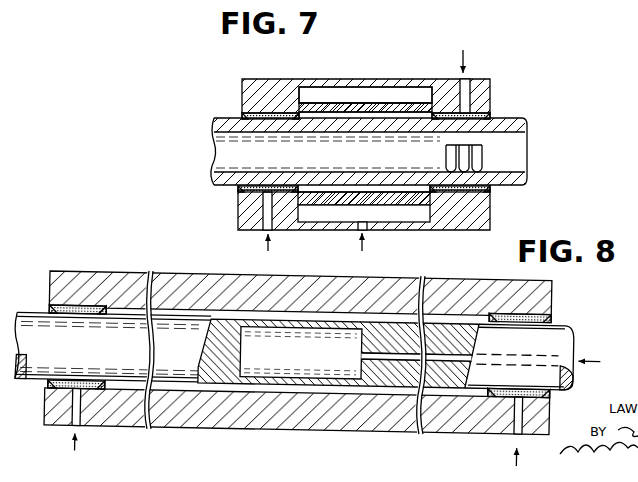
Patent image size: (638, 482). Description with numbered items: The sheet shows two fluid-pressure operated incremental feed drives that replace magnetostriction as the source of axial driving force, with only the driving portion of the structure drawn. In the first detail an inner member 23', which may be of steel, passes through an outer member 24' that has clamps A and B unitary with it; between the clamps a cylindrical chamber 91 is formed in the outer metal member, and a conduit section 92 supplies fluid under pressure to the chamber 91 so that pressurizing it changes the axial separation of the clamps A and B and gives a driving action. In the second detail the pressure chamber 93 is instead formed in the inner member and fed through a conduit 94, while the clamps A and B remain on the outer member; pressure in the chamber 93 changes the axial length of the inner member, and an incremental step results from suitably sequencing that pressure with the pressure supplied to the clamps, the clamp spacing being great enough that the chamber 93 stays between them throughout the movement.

In FIG. 7, the outer member 24' is at (345, 96).
In FIG. 7, the inner member 23' is at (375, 139).
In FIG. 7, the cylindrical chamber 91 is at (361, 90).
In FIG. 7, the conduit section 92 is at (361, 223).
In FIG. 7, the clamp A is at (468, 112).
In FIG. 8, the clamp A is at (538, 312).
In FIG. 7, the clamp B is at (272, 110).
In FIG. 8, the clamp B is at (66, 305).
In FIG. 8, the fluid pressure chamber 93 is at (262, 362).
In FIG. 8, the conduit 94 is at (380, 356).